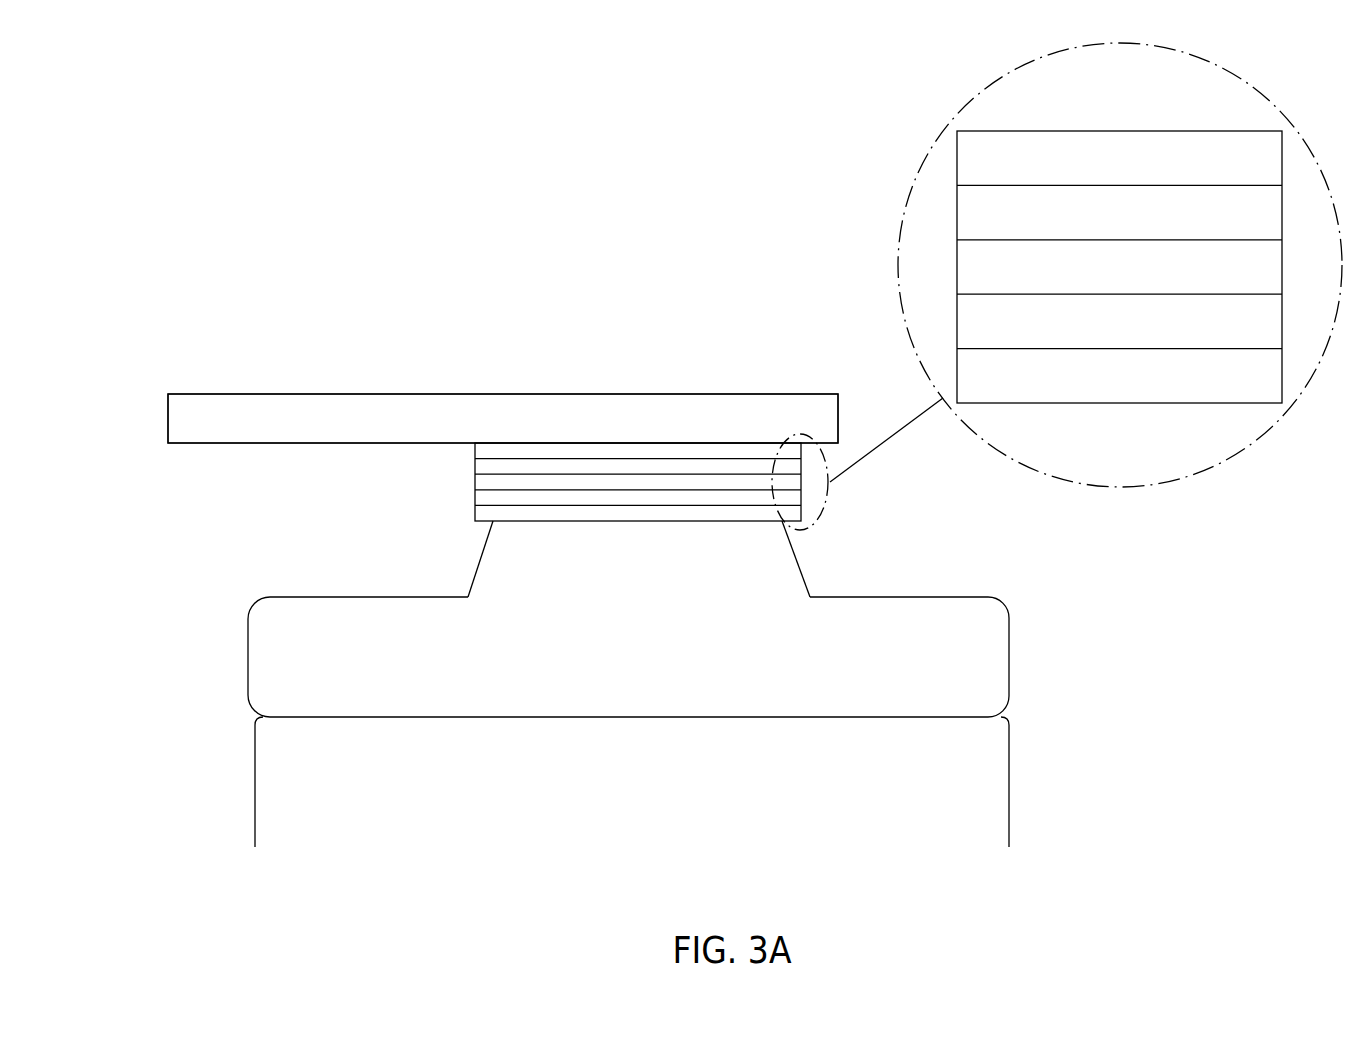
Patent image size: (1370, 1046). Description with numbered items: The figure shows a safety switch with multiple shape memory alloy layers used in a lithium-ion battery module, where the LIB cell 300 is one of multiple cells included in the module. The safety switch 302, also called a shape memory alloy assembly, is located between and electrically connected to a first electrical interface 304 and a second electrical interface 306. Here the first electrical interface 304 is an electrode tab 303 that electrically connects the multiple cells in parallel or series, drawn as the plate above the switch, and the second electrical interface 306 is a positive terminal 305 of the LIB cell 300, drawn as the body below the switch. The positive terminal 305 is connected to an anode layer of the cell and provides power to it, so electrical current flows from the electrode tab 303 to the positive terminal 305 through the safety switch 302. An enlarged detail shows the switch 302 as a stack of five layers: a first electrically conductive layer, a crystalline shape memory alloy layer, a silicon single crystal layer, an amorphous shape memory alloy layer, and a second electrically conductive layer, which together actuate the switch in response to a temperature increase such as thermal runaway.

The LIB cell 300 is at (680, 221).
The safety switch 302 is at (473, 493).
The electrode tab 303 is at (708, 394).
The first electrical interface 304 is at (628, 394).
The positive terminal 305 is at (468, 583).
The second electrical interface 306 is at (807, 583).